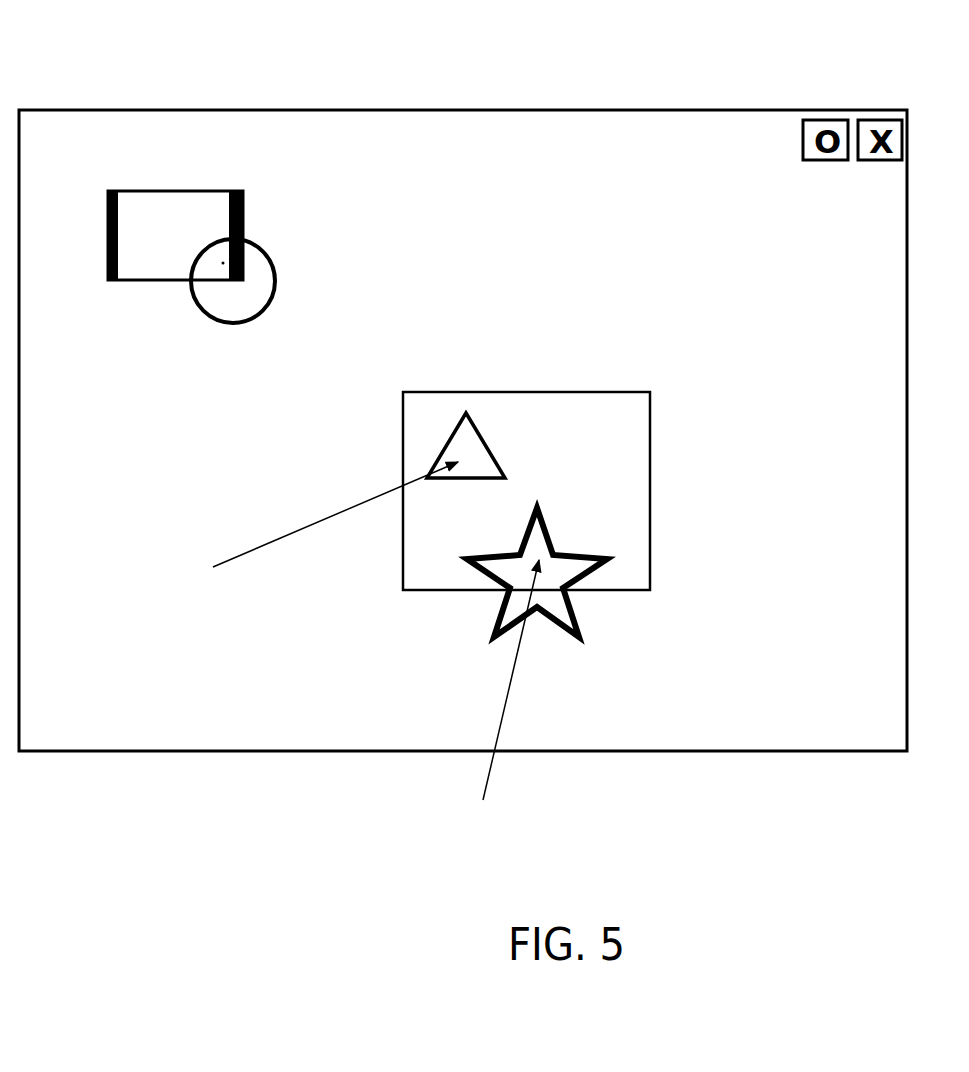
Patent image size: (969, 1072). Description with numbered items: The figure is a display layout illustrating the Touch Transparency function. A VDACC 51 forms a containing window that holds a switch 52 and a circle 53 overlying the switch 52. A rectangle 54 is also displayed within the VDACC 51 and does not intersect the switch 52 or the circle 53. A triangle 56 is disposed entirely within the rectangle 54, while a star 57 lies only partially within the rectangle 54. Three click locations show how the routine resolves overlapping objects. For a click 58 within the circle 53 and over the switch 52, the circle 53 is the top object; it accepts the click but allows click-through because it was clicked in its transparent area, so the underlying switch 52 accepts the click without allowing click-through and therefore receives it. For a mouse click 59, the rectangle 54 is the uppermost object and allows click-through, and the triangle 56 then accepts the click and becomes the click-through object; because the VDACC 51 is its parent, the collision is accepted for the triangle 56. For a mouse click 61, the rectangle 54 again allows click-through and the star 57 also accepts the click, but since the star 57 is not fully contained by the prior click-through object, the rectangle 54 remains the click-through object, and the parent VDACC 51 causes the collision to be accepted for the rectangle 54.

The VDACC 51 is at (138, 752).
The switch 52 is at (165, 190).
The circle 53 is at (263, 240).
The rectangle 54 is at (428, 590).
The triangle 56 is at (478, 425).
The star 57 is at (562, 630).
The click 58 is at (223, 263).
The mouse click 59 is at (312, 531).
The mouse click 61 is at (499, 705).